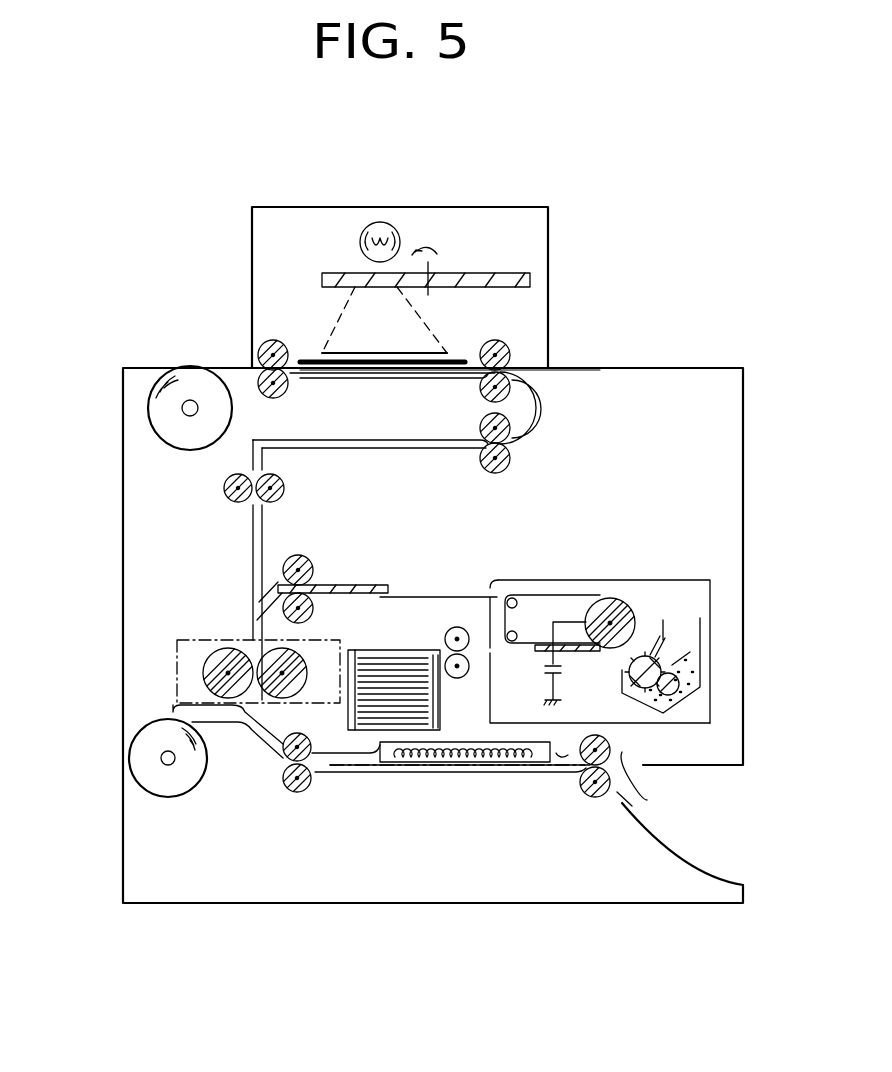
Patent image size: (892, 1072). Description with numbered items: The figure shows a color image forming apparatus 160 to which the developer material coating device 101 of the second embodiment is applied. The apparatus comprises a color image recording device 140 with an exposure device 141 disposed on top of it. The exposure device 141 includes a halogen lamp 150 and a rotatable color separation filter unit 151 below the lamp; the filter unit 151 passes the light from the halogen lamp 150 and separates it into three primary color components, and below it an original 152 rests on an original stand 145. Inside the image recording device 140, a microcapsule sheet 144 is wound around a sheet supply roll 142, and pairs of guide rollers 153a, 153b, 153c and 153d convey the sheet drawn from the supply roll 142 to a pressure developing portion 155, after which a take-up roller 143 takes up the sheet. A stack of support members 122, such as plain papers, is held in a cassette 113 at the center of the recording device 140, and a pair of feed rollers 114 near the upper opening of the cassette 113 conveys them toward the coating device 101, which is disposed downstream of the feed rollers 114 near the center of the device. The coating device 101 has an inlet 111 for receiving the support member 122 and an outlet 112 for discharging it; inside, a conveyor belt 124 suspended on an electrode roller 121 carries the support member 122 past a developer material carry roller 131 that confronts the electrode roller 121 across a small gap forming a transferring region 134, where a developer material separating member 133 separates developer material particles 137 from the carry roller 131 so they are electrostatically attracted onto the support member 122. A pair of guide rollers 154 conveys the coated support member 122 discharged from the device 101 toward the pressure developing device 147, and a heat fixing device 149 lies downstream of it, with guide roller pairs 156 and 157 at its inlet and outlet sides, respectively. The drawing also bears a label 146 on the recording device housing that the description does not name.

The imaging material coating device 101 is at (647, 554).
The inlet 111 is at (412, 690).
The outlet 112 is at (473, 597).
The cassette 113 is at (372, 766).
The feed rollers 114 is at (453, 627).
The electrode roller 121 is at (610, 598).
The support member 122 is at (378, 585).
The conveyor belt 124 is at (538, 595).
The developer material carry roller 131 is at (677, 647).
The developer material separating member 133 is at (658, 644).
The transferring region 134 is at (622, 654).
The developer material particles 137 is at (710, 673).
The color image recording device 140 is at (160, 322).
The exposure device 141 is at (245, 244).
The sheet supply roll 142 is at (150, 414).
The take-up roller 143 is at (130, 758).
The microcapsule sheet 144 is at (342, 446).
The original stand 145 is at (348, 352).
The housing 146 is at (123, 520).
The pressure developing device 147 is at (206, 617).
The heat fixing device 149 is at (437, 762).
The halogen lamp 150 is at (372, 224).
The rotatable color separation filter unit 151 is at (337, 273).
The original 152 is at (447, 362).
The guide rollers 153a is at (257, 378).
The guide rollers 153b is at (482, 395).
The guide rollers 153c is at (481, 466).
The guide rollers 153d is at (225, 488).
The guide rollers 154 is at (305, 562).
The pressure developing portion 155 is at (200, 677).
The guide rollers 156 is at (297, 794).
The guide rollers 157 is at (580, 775).
The color image forming apparatus 160 is at (712, 262).